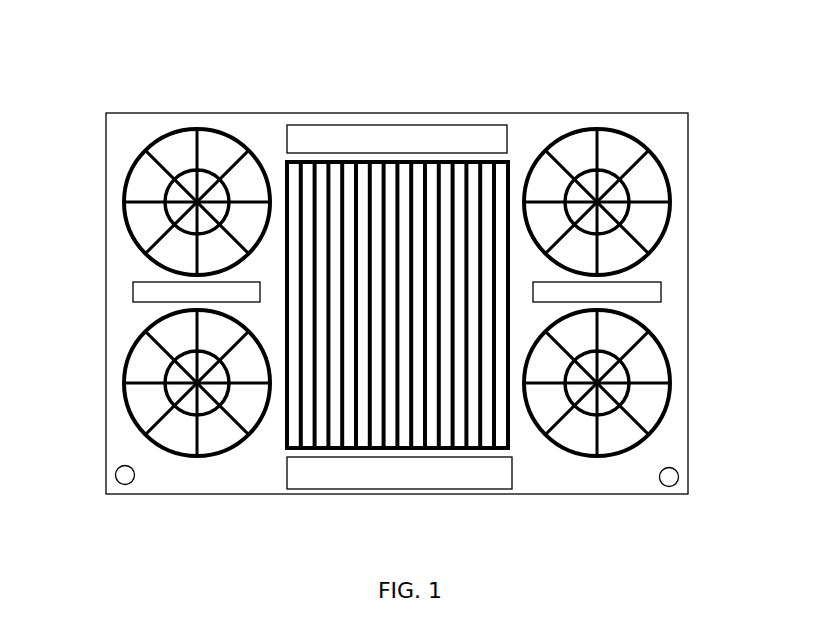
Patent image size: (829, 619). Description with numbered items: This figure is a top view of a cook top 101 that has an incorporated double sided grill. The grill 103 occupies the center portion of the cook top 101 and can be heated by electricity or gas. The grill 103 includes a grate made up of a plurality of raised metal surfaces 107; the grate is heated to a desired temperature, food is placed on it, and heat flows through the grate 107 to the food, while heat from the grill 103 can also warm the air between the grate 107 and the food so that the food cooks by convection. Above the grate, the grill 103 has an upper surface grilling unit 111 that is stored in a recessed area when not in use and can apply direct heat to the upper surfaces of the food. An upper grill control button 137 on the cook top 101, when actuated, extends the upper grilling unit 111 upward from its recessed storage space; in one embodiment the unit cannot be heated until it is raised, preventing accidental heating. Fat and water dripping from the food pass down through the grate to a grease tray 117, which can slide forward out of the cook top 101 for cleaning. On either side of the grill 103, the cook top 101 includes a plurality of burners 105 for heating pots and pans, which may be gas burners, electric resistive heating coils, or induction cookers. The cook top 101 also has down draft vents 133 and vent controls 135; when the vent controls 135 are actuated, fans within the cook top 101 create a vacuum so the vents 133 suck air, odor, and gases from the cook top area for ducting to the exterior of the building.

The cook top 101 is at (708, 148).
The grill 103 is at (287, 422).
The burners 105 is at (132, 188).
The raised metal surfaces of the grate 107 is at (494, 428).
The upper surface grilling unit 111 is at (382, 132).
The grease tray 117 is at (402, 472).
The down draft vents 133 is at (147, 292).
The vent controls 135 is at (117, 468).
The upper grill control button 137 is at (678, 478).